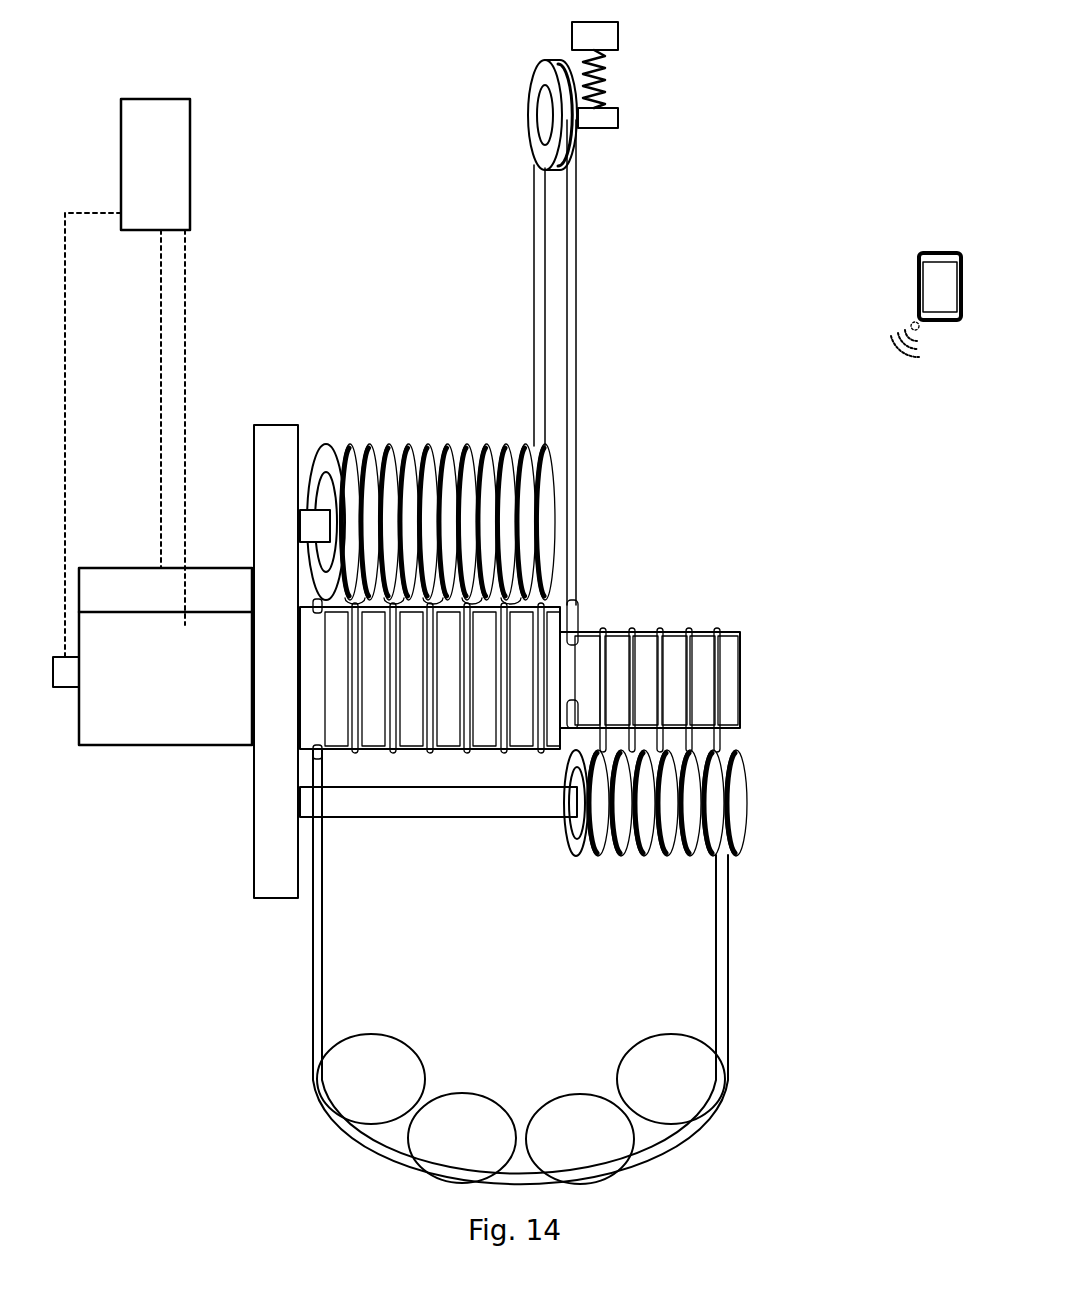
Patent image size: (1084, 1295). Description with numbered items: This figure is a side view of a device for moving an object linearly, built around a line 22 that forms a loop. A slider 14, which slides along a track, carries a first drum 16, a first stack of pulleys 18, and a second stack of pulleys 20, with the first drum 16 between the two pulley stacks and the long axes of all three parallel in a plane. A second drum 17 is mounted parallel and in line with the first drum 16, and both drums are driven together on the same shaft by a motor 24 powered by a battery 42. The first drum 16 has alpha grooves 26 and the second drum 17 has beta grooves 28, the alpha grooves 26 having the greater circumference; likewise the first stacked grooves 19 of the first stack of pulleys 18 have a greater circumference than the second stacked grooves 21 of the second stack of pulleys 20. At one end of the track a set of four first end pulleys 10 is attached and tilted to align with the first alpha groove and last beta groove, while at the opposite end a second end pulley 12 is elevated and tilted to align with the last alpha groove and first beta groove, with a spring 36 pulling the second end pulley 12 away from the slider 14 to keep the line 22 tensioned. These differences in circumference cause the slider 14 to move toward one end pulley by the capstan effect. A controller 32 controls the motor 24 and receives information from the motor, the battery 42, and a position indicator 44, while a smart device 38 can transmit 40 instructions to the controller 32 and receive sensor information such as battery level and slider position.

The first end pulleys 10 is at (405, 1062).
The second end pulley 12 is at (545, 72).
The slider 14 is at (254, 897).
The first drum 16 is at (300, 652).
The second drum 17 is at (740, 690).
The first stack of pulleys 18 is at (318, 463).
The first stacked grooves 19 is at (335, 585).
The second stack of pulleys 20 is at (570, 835).
The second stacked grooves 21 is at (574, 772).
The line 22 is at (572, 368).
The motor 24 is at (155, 742).
The alpha grooves 26 is at (318, 703).
The beta grooves 28 is at (572, 640).
The controller 32 is at (183, 143).
The spring 36 is at (600, 103).
The smart device 38 is at (920, 256).
The transmit 40 is at (886, 323).
The battery 42 is at (125, 598).
The position indicator 44 is at (65, 690).